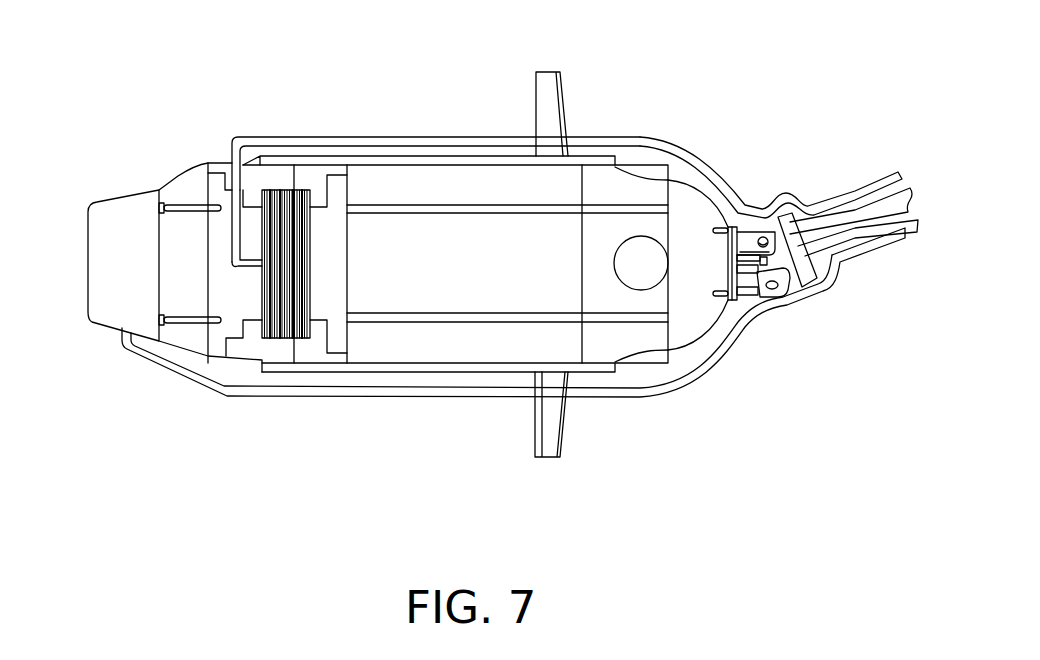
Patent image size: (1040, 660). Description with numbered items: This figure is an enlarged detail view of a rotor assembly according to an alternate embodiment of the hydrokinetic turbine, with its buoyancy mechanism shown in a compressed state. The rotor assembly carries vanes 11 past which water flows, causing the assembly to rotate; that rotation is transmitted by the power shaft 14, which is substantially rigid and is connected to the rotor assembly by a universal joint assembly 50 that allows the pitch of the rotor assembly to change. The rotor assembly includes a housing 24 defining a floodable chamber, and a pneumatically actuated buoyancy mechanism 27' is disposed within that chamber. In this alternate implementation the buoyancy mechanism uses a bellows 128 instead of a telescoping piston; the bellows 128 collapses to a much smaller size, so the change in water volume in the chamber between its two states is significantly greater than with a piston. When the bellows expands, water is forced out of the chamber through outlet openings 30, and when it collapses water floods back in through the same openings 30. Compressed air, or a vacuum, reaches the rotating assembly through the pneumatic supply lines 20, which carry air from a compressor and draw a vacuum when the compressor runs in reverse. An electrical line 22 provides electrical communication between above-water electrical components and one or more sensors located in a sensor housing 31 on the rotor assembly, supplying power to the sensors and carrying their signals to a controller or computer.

The vanes 11 is at (548, 102).
The power shaft 14 is at (875, 215).
The pneumatic supply lines 20 is at (282, 137).
The electrical line 22 is at (165, 368).
The housing 24 is at (187, 170).
The buoyancy mechanism 27' is at (228, 326).
The outlet openings 30 is at (645, 272).
The sensor housing 31 is at (120, 217).
The universal joint assembly 50 is at (748, 233).
The bellows 128 is at (297, 340).